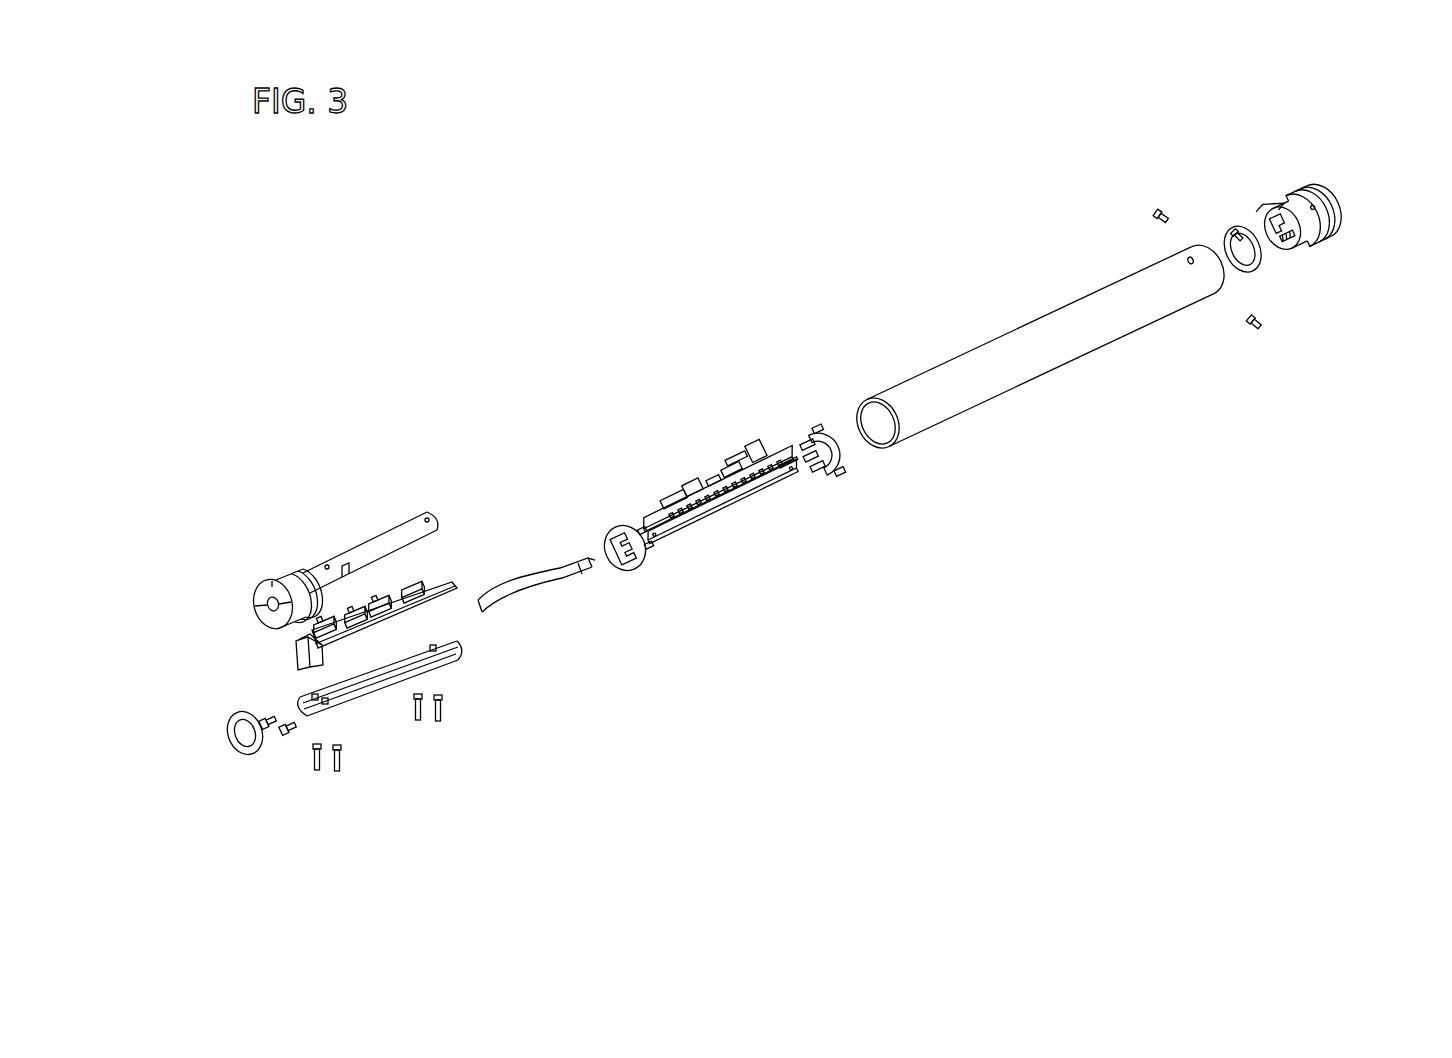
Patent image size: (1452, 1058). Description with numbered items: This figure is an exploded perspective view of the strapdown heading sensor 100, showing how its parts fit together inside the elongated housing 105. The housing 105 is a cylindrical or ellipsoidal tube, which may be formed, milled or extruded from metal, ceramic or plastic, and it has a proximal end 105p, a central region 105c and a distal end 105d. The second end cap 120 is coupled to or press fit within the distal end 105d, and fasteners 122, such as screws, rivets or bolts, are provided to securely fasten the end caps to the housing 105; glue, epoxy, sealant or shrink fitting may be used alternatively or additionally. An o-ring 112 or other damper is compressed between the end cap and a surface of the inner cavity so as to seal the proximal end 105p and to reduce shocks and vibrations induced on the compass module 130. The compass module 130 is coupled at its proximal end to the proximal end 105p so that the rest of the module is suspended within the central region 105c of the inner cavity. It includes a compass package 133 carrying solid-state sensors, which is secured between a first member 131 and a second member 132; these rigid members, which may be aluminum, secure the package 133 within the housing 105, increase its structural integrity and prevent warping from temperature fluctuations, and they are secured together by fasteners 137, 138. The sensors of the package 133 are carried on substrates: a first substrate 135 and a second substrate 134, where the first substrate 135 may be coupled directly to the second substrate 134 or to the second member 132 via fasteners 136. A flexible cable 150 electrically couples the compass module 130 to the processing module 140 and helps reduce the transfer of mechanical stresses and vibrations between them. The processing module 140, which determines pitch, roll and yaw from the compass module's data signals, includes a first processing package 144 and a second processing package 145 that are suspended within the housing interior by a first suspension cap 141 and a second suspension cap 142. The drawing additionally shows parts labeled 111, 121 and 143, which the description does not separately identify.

The strapdown heading sensor 100 is at (1013, 142).
The elongated housing 105 is at (1030, 385).
The central region of the elongated housing 105c is at (1020, 322).
The proximal end of the elongated housing 105p is at (853, 400).
The distal end of the elongated housing 105d is at (1185, 238).
The proximal end cap 111 is at (252, 611).
The o-ring 112 is at (225, 746).
The second end cap 120 is at (1333, 230).
The retaining ring 121 is at (1262, 266).
The fasteners 122 is at (1152, 212).
The compass module 130 is at (305, 530).
The first member 131 is at (415, 510).
The second member 132 is at (455, 659).
The compass package 133 is at (426, 565).
The second substrate 134 is at (458, 580).
The first substrate 135 is at (292, 650).
The fasteners 136 is at (268, 732).
The fasteners 137 is at (319, 773).
The fasteners 138 is at (421, 724).
The processing module 140 is at (707, 437).
The first suspension cap 141 is at (620, 520).
The second suspension cap 142 is at (815, 428).
The lower circuit board 143 is at (703, 558).
The first processing package 144 is at (742, 512).
The second processing package 145 is at (790, 478).
The flexible cable 150 is at (580, 583).